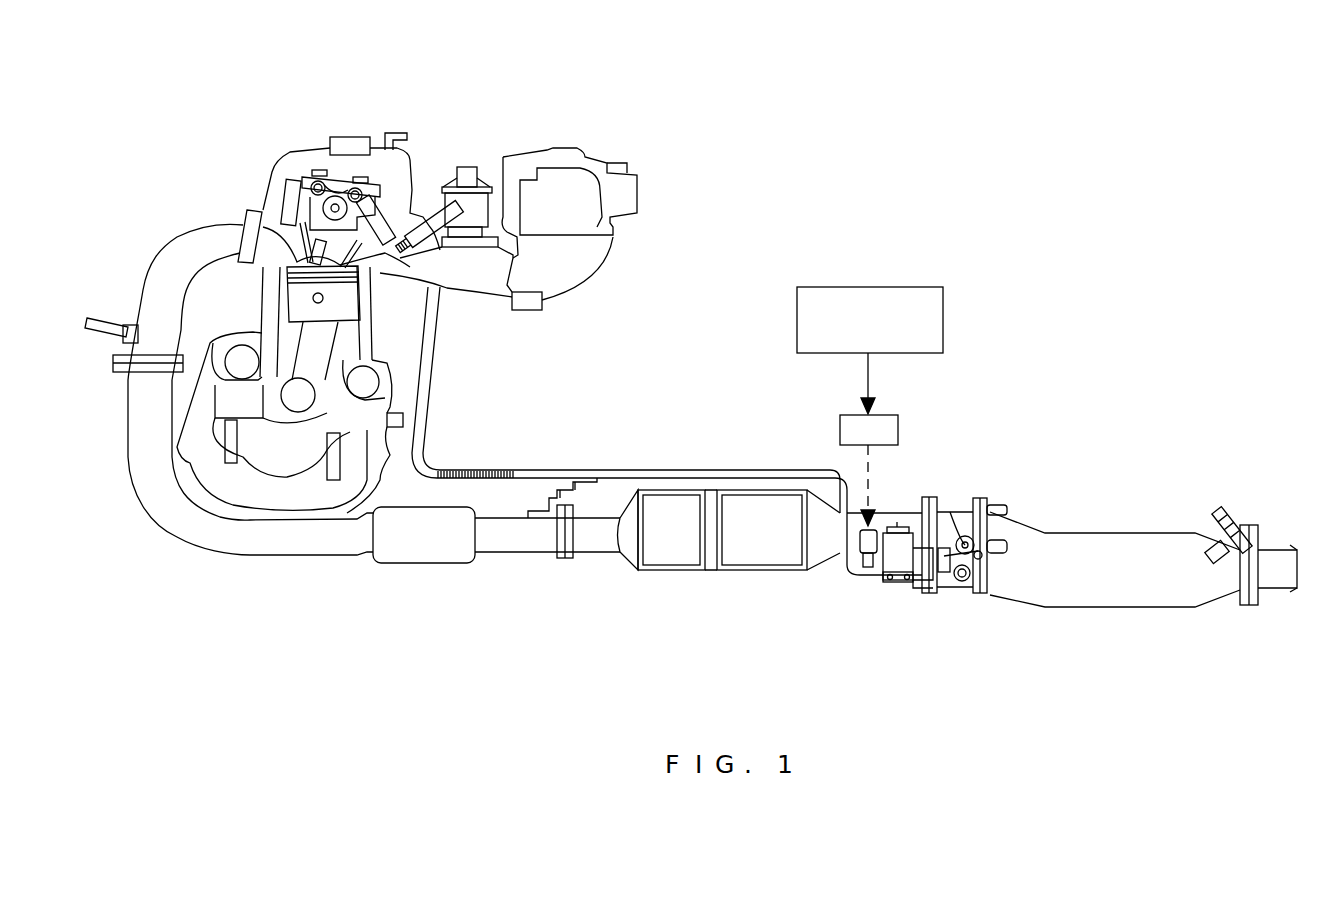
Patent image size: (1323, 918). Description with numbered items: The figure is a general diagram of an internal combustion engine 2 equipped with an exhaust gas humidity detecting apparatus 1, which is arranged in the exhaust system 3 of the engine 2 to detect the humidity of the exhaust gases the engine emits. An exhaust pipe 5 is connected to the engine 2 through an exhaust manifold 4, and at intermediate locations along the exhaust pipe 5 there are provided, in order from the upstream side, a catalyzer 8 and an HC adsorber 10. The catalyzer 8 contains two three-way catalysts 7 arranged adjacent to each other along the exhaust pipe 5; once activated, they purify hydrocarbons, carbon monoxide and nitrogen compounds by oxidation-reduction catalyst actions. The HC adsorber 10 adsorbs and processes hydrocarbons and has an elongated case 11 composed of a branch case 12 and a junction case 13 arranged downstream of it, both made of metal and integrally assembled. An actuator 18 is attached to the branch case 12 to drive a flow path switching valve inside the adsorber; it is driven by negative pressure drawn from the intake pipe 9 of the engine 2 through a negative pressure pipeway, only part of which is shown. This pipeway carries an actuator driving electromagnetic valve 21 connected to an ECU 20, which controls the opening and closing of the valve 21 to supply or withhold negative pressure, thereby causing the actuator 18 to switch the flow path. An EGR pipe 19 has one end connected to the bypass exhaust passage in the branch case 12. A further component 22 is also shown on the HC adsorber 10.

The exhaust gas humidity detecting apparatus 1 is at (1176, 378).
The internal combustion engine 2 is at (290, 152).
The exhaust system 3 is at (114, 238).
The exhaust manifold 4 is at (228, 222).
The exhaust pipe 5 is at (283, 558).
The three-way catalysts 7 is at (747, 557).
The catalyzer 8 is at (622, 558).
The intake pipe 9 is at (592, 270).
The HC adsorber 10 is at (1075, 522).
The case 11 is at (1040, 653).
The branch case 12 is at (963, 590).
The junction case 13 is at (1040, 610).
The actuator 18 is at (918, 590).
The EGR pipe 19 is at (843, 577).
The ECU 20 is at (930, 287).
The actuator driving electromagnetic valve 21 is at (898, 417).
The sensor 22 is at (1250, 513).